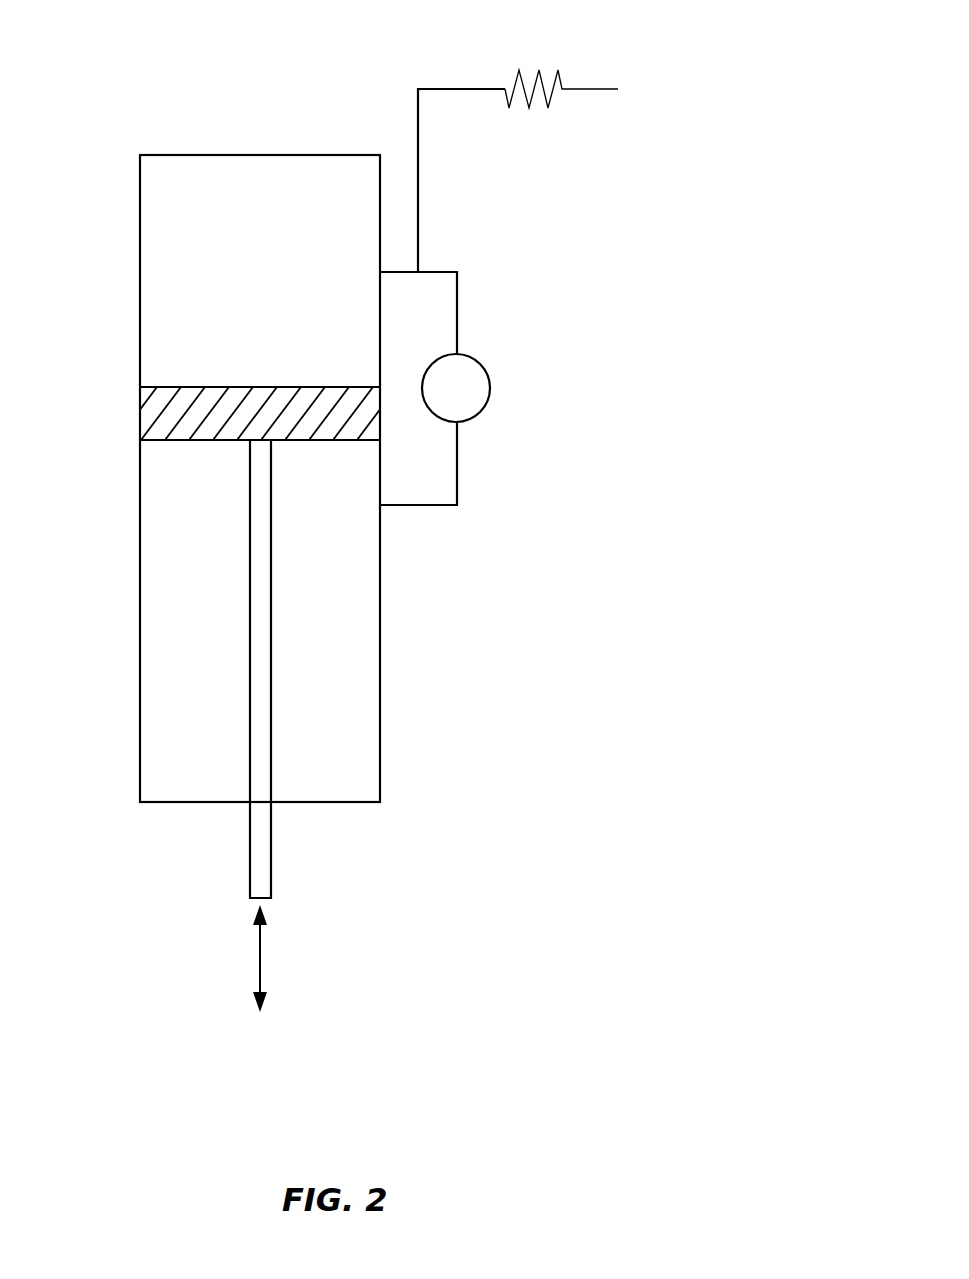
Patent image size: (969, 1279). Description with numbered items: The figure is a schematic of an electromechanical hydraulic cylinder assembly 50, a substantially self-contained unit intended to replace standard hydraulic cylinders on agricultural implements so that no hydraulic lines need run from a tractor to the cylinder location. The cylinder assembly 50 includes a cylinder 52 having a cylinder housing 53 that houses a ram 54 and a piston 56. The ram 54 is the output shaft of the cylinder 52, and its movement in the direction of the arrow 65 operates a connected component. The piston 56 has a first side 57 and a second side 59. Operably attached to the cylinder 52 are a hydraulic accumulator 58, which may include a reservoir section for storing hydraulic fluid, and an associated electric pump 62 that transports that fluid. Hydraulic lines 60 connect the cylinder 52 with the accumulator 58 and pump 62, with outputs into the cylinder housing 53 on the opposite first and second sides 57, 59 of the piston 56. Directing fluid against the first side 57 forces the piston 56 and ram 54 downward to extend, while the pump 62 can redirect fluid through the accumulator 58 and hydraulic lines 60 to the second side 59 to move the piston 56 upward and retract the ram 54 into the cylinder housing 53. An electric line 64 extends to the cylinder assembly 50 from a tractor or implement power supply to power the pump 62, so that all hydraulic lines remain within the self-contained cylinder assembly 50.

The electromechanical hydraulic cylinder assembly 50 is at (127, 60).
The cylinder 52 is at (107, 275).
The cylinder housing 53 is at (140, 588).
The ram 54 is at (272, 667).
The piston 56 is at (290, 387).
The first side 57 is at (223, 387).
The hydraulic accumulator 58 is at (472, 360).
The second side 59 is at (215, 440).
The hydraulic lines 60 is at (457, 460).
The pump 62 is at (490, 385).
The electric line 64 is at (440, 89).
The arrow 65 is at (262, 952).